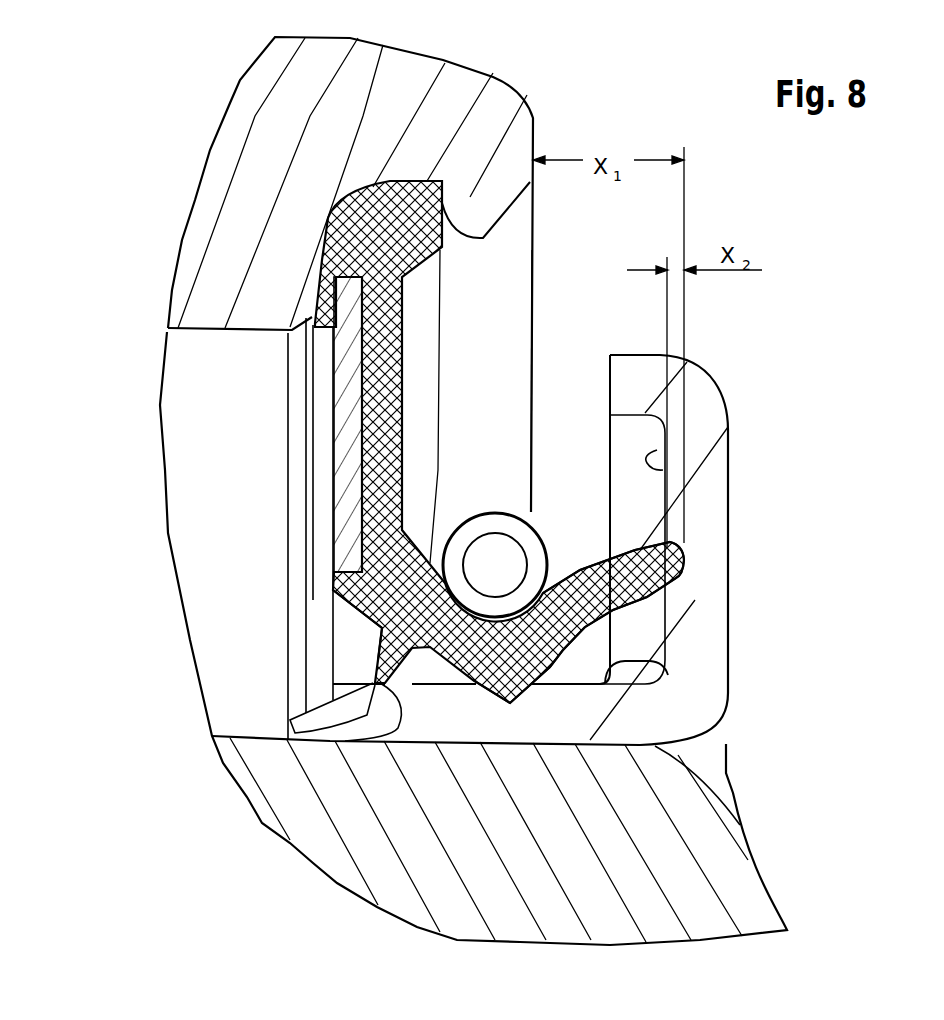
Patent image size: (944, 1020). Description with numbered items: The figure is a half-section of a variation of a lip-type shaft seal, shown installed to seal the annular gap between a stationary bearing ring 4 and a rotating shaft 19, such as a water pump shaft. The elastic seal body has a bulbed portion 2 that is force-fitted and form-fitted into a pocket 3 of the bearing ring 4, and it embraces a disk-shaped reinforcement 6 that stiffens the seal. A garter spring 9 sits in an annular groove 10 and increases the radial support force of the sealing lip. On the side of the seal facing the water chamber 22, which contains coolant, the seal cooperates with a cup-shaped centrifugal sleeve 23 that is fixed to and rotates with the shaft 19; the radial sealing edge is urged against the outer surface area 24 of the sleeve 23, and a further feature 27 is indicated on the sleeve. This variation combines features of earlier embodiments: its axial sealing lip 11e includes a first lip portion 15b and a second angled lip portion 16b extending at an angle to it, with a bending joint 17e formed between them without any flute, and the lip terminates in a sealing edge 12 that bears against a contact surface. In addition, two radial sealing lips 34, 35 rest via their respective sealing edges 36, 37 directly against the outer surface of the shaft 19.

The bearing ring 4 is at (242, 162).
The shaft 19 is at (280, 425).
The disk-shaped reinforcement 6 is at (340, 500).
The annular groove 10 is at (452, 470).
The garter spring 9 is at (530, 537).
The pocket 3 is at (447, 203).
The bulbed portion 2 is at (442, 245).
The water chamber 22 is at (583, 400).
The first lip portion 15b is at (560, 570).
The centrifugal sleeve 23 is at (727, 388).
The bead 27 is at (657, 450).
The second angled lip portion 16b is at (638, 550).
The sealing edge 12 is at (684, 562).
The axial sealing lip 11e is at (677, 578).
The bending joint 17e is at (614, 606).
The outer surface area 24 is at (662, 687).
The radial sealing lip 34 is at (372, 668).
The sealing edge 36 is at (290, 715).
The sealing edge 37 is at (512, 705).
The radial sealing lip 35 is at (563, 697).